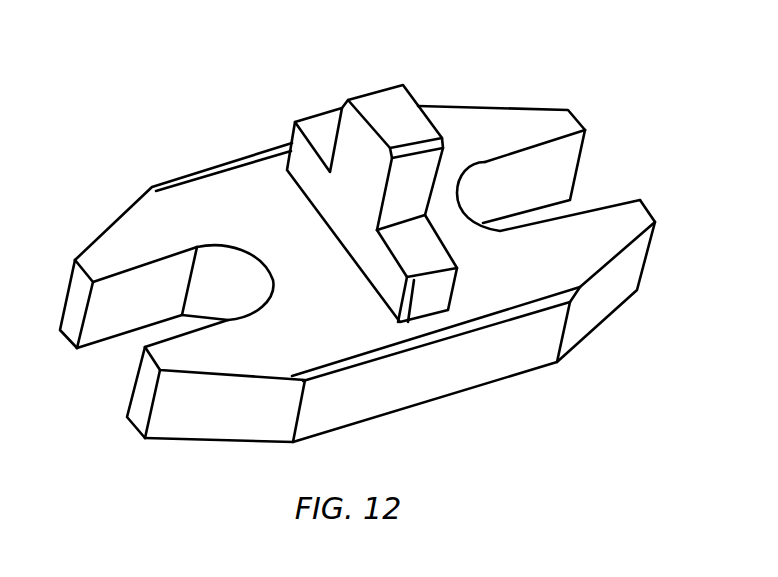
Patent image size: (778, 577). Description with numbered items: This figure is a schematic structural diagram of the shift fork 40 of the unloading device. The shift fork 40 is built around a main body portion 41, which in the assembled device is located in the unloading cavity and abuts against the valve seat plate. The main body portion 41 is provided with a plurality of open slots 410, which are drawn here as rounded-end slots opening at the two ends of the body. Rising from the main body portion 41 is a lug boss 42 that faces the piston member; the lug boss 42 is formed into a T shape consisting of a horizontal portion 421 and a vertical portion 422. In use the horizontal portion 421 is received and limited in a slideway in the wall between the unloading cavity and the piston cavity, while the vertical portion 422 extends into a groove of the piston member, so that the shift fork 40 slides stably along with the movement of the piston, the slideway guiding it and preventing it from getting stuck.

The shift fork 40 is at (137, 150).
The main body portion 41 is at (465, 372).
The open slots 410 is at (147, 337).
The lug boss 42 is at (330, 35).
The horizontal portion 421 is at (327, 130).
The vertical portion 422 is at (392, 103).